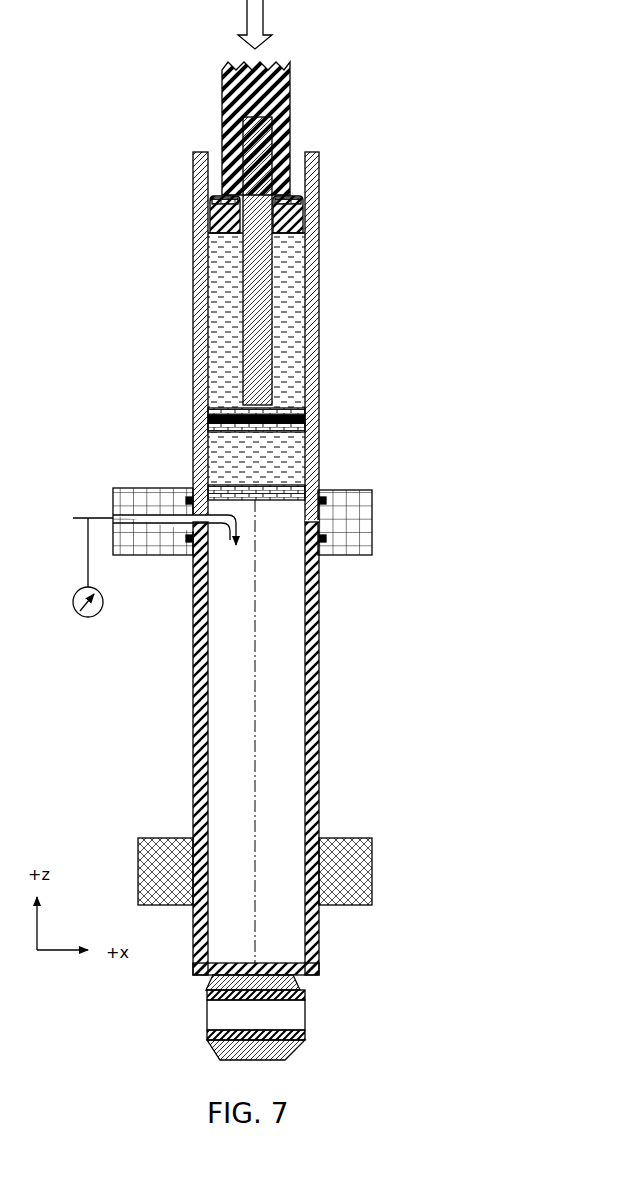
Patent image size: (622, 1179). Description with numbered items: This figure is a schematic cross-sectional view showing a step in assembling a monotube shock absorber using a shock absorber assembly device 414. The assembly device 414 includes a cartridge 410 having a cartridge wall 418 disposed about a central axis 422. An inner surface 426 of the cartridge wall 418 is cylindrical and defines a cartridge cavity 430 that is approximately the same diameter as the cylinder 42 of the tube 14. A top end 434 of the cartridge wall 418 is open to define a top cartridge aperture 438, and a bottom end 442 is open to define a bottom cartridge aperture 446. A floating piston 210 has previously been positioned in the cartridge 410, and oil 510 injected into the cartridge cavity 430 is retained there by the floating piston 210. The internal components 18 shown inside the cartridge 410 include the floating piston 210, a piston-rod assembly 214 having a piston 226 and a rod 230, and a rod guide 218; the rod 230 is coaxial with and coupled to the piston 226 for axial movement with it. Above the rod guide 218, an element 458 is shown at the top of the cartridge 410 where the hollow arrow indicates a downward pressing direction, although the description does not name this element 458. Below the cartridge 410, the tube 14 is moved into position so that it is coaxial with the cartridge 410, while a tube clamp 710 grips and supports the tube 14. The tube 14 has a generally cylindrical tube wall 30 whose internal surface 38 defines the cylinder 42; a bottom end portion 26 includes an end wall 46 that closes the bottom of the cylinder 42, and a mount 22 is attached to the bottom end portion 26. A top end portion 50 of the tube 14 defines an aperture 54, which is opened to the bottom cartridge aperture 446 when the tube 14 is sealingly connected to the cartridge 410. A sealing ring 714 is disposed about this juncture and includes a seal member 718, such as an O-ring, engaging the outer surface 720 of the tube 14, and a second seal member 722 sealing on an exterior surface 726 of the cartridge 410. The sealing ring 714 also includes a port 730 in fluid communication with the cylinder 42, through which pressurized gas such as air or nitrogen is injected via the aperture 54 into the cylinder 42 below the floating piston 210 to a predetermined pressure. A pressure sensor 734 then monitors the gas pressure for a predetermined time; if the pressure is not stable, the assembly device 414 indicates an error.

The plunger 458 is at (222, 78).
The top cartridge aperture 438 is at (208, 152).
The top end 434 is at (308, 185).
The inner surface 426 is at (303, 184).
The shock absorber assembly device 414 is at (152, 178).
The cartridge 410 is at (190, 268).
The rod guide 218 is at (300, 226).
The internal components 18 is at (280, 240).
The rod 230 is at (252, 315).
The cartridge cavity 430 is at (294, 287).
The exterior surface 726 is at (319, 325).
The cartridge wall 418 is at (203, 352).
The piston 226 is at (222, 410).
The oil 510 is at (286, 376).
The piston-rod assembly 214 is at (280, 400).
The bottom cartridge aperture 446 is at (310, 524).
The port 730 is at (133, 488).
The floating piston 210 is at (232, 498).
The seal member 718 is at (326, 500).
The bottom end 442 is at (340, 522).
The seal member 722 is at (326, 538).
The top end portion 50 is at (187, 568).
The aperture 54 is at (316, 575).
The sealing ring 714 is at (366, 558).
The pressure sensor 734 is at (88, 617).
The tube wall 30 is at (202, 675).
The tube 14 is at (193, 713).
The central axis 422 is at (256, 772).
The cylinder 42 is at (222, 785).
The outer surface 720 is at (319, 680).
The tube clamp 710 is at (360, 838).
The internal surface 38 is at (304, 942).
The bottom end portion 26 is at (186, 946).
The end wall 46 is at (296, 973).
The mount 22 is at (220, 1046).